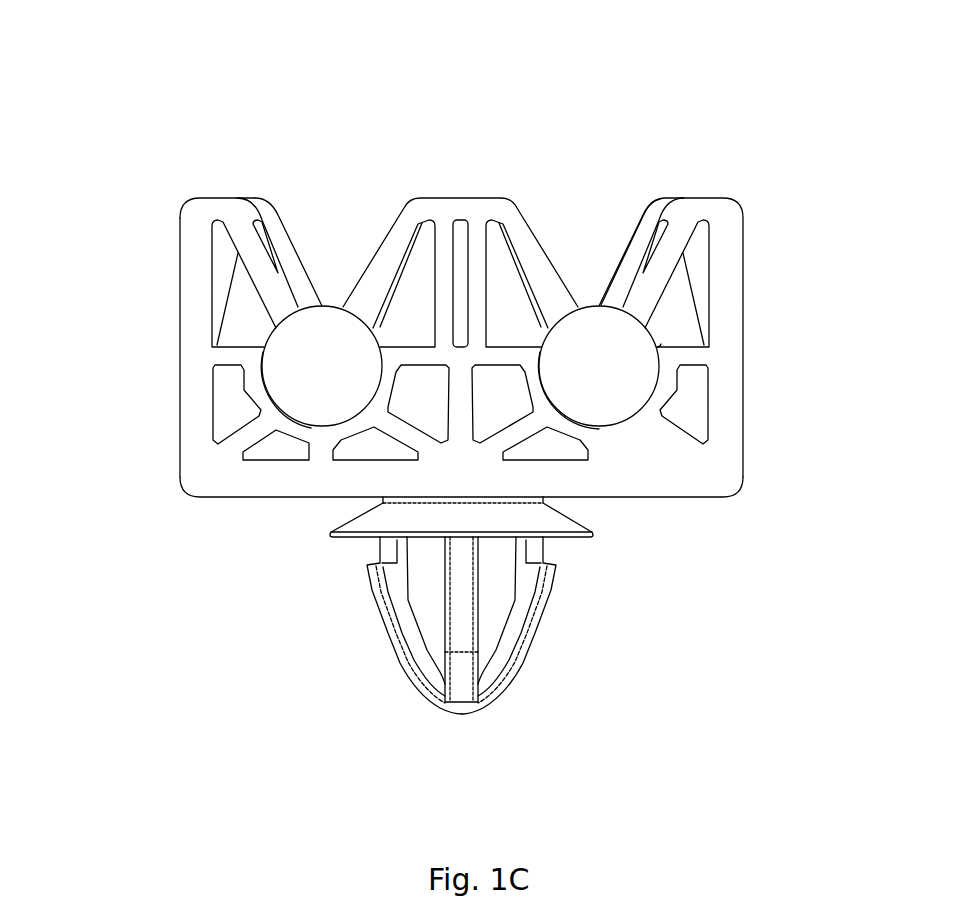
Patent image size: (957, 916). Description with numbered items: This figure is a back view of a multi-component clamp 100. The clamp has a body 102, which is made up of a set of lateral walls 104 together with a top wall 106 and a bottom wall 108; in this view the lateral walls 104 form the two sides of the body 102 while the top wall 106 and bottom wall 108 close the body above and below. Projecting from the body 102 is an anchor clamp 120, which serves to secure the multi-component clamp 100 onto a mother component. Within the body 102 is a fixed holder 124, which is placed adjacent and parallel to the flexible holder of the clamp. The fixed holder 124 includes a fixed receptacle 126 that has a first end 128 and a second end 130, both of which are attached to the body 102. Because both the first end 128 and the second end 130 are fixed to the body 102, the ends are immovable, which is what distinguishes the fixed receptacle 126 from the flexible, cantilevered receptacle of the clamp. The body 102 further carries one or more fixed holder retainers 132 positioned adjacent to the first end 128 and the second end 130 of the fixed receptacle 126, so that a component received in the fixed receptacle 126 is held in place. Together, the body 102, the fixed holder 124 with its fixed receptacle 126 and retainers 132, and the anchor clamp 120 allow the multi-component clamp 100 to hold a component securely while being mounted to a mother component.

The multi-component clamp 100 is at (495, 160).
The body 102 is at (710, 168).
The lateral walls 104 is at (177, 333).
The top wall 106 is at (250, 497).
The bottom wall 108 is at (217, 197).
The anchor clamp 120 is at (528, 632).
The fixed holder 124 is at (672, 307).
The fixed receptacle 126 is at (670, 393).
The first end 128 is at (536, 300).
The second end 130 is at (662, 345).
The fixed holder retainers 132 is at (656, 225).